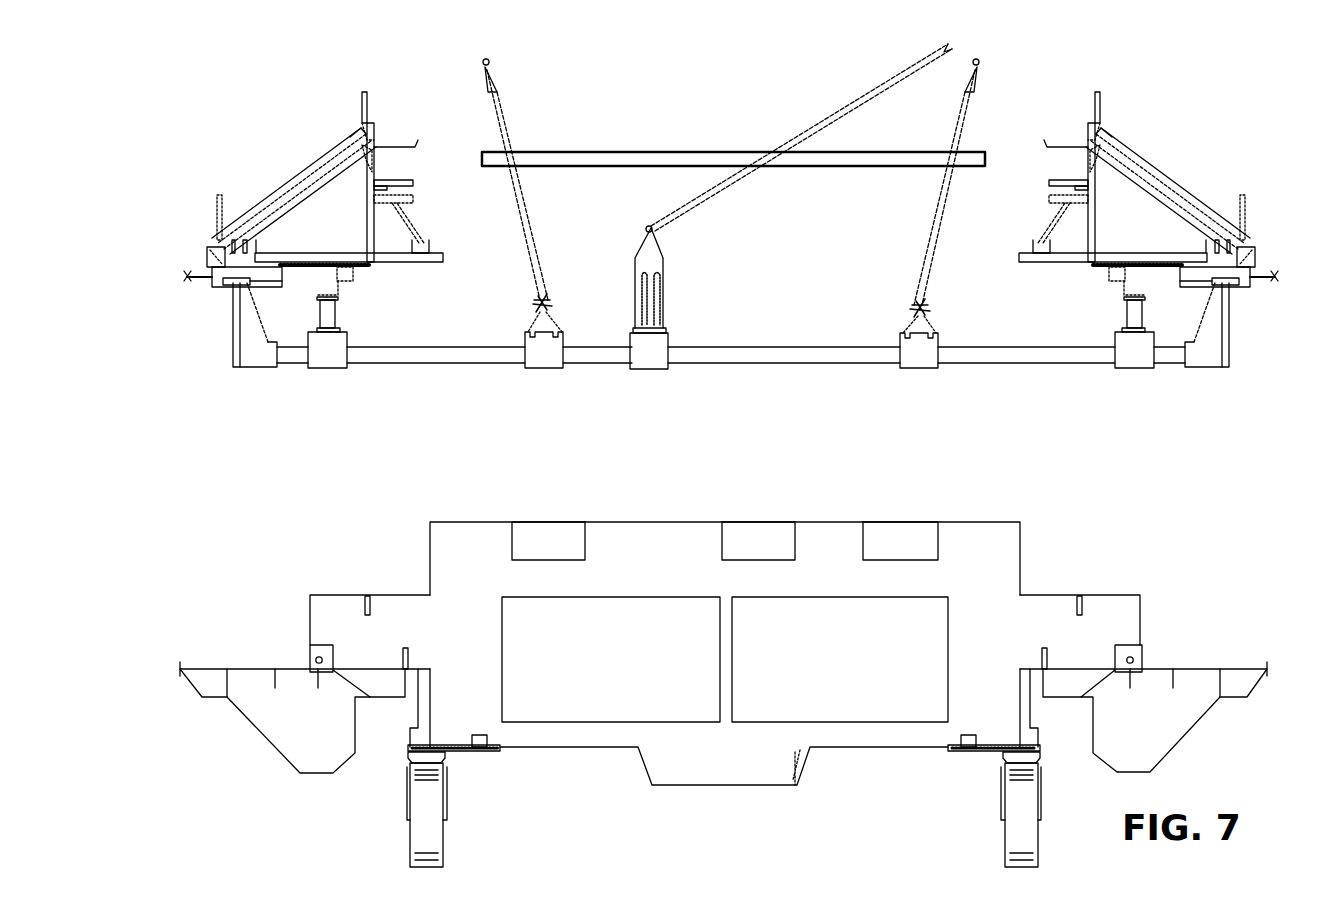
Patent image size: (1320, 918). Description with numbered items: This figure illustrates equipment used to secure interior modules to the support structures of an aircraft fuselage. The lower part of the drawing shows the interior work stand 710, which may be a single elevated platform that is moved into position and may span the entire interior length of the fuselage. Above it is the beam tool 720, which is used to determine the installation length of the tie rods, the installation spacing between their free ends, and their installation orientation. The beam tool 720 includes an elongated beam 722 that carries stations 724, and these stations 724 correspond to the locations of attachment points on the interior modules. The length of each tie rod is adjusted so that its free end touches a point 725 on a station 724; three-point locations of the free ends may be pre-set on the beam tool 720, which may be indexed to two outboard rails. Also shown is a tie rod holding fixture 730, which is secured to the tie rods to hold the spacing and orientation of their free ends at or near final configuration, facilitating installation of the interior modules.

The interior work stand 710 is at (470, 519).
The beam tool 720 is at (731, 236).
The elongated beam 722 is at (773, 363).
The station 724 is at (547, 365).
The point 725 is at (535, 303).
The tie rod holding fixture 730 is at (642, 151).